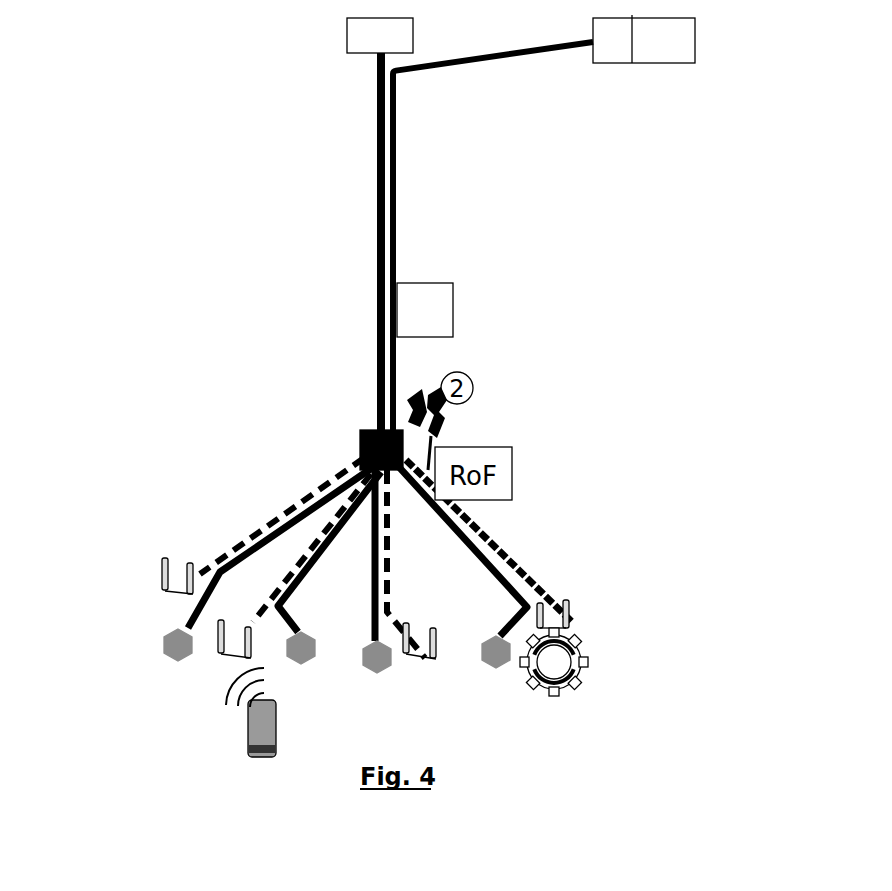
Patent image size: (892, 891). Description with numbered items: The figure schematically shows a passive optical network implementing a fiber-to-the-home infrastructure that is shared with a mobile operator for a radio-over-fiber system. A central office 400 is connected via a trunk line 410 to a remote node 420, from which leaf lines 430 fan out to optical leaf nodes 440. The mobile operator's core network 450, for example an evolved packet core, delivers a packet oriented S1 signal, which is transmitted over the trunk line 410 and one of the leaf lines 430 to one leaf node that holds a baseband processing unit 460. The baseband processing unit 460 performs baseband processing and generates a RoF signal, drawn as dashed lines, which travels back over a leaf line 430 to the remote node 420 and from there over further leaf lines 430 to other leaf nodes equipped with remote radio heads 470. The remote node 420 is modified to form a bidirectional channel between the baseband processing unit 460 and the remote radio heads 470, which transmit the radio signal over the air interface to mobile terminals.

The central office 400 is at (347, 47).
The trunk line 410 is at (377, 153).
The remote node 420 is at (360, 430).
The leaf lines 430 is at (196, 610).
The optical leaf nodes 440 is at (175, 660).
The core network 450 is at (630, 63).
The baseband processing unit 460 is at (585, 668).
The remote radio heads 470 is at (437, 655).